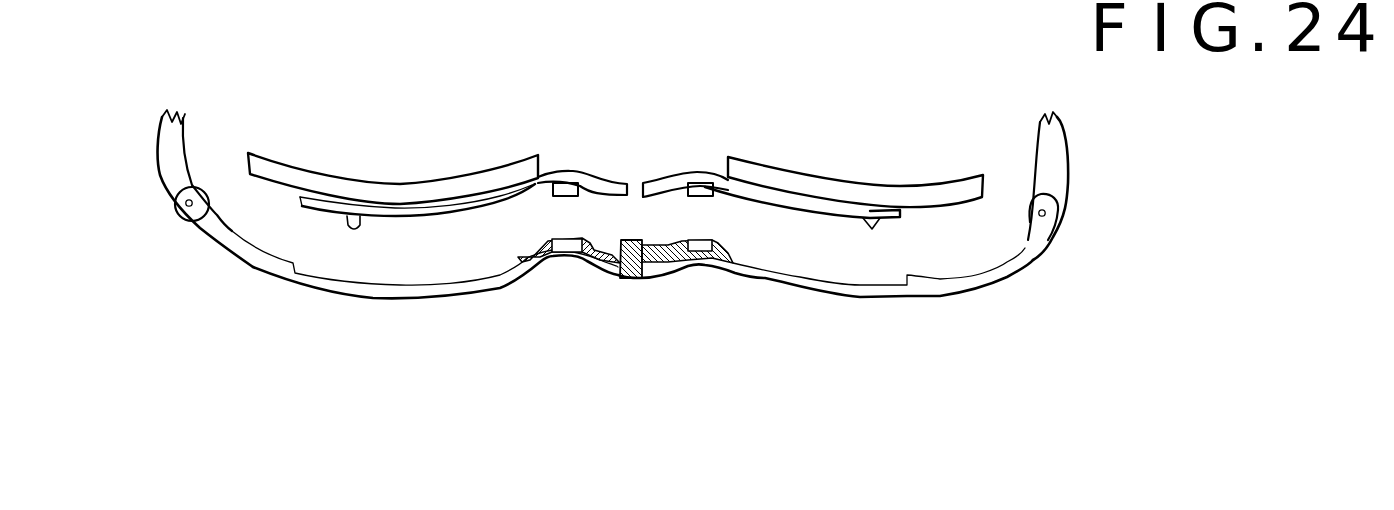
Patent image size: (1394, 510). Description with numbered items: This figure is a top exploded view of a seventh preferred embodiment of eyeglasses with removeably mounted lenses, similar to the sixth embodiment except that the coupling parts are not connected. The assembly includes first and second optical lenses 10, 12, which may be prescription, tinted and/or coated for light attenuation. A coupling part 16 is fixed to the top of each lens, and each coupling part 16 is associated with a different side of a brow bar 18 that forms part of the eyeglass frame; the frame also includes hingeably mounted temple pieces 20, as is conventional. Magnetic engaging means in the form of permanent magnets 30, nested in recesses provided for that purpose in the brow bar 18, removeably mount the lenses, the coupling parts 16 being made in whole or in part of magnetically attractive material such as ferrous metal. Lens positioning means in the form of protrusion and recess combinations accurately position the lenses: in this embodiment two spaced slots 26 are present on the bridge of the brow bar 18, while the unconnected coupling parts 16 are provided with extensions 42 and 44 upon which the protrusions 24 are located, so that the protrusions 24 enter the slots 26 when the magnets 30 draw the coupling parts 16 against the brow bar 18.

The first optical lens 10 is at (807, 180).
The second optical lens 12 is at (250, 152).
The coupling part 16 is at (370, 215).
The brow bar 18 is at (350, 297).
The temple pieces 20 is at (163, 112).
The protrusions 24 is at (565, 182).
The protrusion receiving recesses 26 is at (557, 258).
The permanent magnets 30 is at (670, 280).
The extension 42 is at (614, 172).
The extension 44 is at (665, 178).